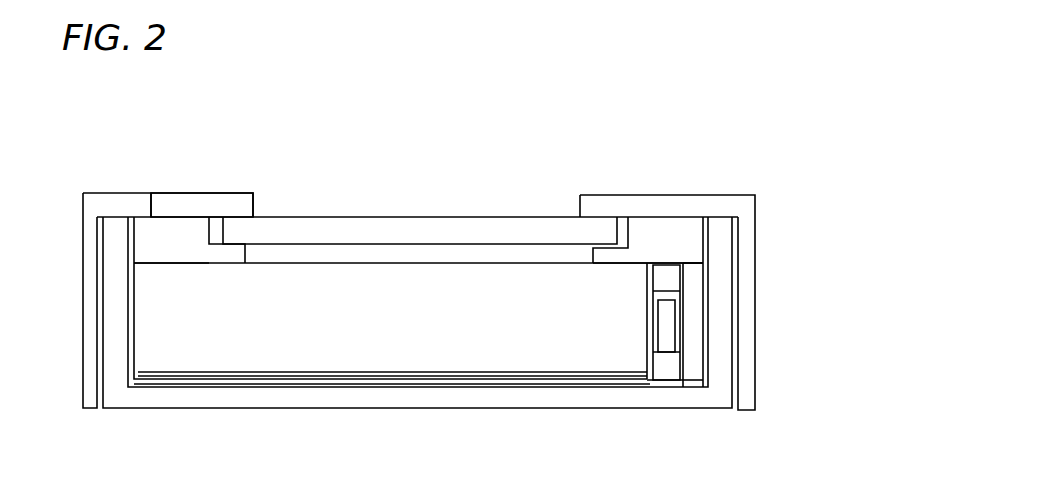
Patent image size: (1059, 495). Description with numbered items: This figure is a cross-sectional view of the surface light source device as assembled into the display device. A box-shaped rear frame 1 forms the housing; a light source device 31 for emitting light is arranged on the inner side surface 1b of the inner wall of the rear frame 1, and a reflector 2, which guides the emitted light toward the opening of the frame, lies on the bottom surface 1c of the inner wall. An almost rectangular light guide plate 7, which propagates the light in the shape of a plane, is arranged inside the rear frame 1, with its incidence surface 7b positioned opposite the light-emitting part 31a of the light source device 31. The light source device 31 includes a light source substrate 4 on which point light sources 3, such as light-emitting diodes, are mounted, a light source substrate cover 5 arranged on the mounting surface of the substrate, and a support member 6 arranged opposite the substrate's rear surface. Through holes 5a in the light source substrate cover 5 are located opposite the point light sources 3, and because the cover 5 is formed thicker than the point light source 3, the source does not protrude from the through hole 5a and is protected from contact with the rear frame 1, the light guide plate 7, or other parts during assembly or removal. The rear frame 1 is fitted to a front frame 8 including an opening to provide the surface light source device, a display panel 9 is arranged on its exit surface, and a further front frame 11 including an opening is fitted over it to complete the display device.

The rear frame 1 is at (387, 397).
The inner side surface 1b is at (703, 376).
The bottom surface 1c is at (500, 384).
The reflector 2 is at (315, 378).
The point light source 3 is at (665, 315).
The light source substrate 4 is at (680, 320).
The light source substrate cover 5 is at (700, 376).
The through hole 5a is at (652, 357).
The support member 6 is at (690, 333).
The light guide plate 7 is at (318, 303).
The incidence surface 7b is at (560, 285).
The front frame 8 is at (150, 247).
The display panel 9 is at (363, 237).
The front frame 11 is at (219, 208).
The light source device 31 is at (788, 388).
The light-emitting part 31a is at (666, 315).